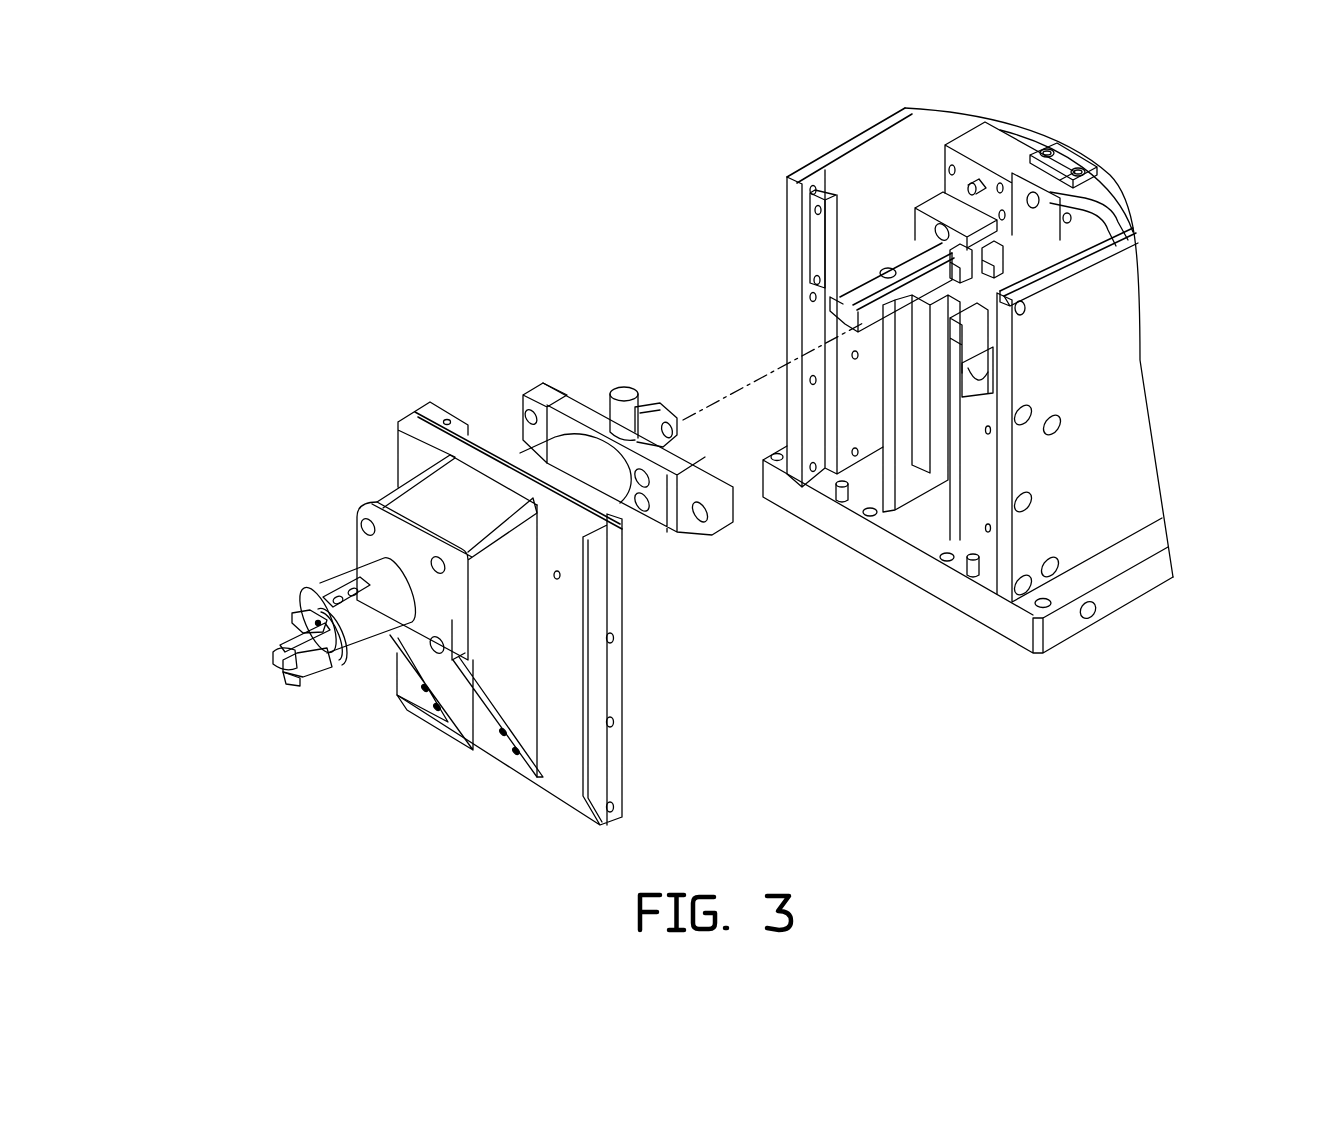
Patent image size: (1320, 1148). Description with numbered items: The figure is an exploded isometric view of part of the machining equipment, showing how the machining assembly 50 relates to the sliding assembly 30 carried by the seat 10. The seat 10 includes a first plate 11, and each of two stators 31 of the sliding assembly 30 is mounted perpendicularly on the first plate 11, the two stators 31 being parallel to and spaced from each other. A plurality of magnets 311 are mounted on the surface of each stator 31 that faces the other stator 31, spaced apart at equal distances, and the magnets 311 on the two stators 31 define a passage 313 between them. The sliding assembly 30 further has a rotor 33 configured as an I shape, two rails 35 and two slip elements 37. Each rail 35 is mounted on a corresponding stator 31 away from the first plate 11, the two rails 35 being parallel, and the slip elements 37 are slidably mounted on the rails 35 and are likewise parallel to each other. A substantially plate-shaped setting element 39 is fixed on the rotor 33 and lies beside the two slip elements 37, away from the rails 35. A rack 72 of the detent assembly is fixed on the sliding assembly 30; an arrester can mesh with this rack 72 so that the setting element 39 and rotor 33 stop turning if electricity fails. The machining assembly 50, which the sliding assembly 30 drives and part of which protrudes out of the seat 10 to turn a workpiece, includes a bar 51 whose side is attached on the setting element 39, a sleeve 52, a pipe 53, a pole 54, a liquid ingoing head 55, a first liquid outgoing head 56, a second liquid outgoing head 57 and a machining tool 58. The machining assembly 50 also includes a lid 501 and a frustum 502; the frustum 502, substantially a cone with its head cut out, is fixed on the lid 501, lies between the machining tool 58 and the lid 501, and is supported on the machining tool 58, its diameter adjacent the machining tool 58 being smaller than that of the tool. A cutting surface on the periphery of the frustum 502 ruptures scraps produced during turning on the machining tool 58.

The seat 10 is at (562, 727).
The first plate 11 is at (1153, 580).
The sliding assembly 30 is at (1102, 160).
The stator 31 is at (1183, 484).
The magnets 311 is at (933, 370).
The passage 313 is at (917, 487).
The rotor 33 is at (1045, 262).
The rail 35 is at (908, 264).
The slip element 37 is at (937, 212).
The setting element 39 is at (1016, 148).
The machining assembly 50 is at (372, 400).
The lid 501 is at (290, 640).
The frustum 502 is at (279, 662).
The bar 51 is at (568, 403).
The sleeve 52 is at (355, 548).
The pipe 53 is at (557, 475).
The pole 54 is at (318, 672).
The liquid ingoing head 55 is at (628, 396).
The first liquid outgoing head 56 is at (300, 615).
The second liquid outgoing head 57 is at (342, 605).
The machining tool 58 is at (290, 680).
The rack 72 is at (1068, 158).